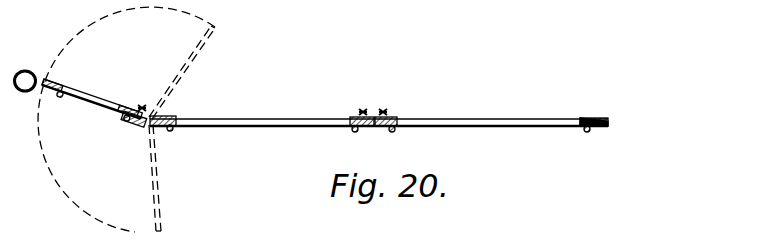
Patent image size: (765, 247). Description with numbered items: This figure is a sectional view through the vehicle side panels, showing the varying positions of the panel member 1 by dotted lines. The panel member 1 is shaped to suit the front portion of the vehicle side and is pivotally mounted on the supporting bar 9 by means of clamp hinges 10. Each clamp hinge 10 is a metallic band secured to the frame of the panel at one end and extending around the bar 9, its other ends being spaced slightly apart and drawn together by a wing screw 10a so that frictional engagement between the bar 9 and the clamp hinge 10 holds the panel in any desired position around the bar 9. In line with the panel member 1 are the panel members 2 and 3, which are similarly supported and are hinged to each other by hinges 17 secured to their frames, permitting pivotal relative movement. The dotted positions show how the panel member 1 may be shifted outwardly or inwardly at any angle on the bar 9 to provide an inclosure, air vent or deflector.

The panel member 1 is at (99, 105).
The panel member 2 is at (285, 128).
The panel member 3 is at (546, 129).
The supporting bar 9 is at (147, 124).
The clamp hinge 10 is at (175, 115).
The wing screw 10a is at (160, 113).
The hinge 17 is at (394, 116).